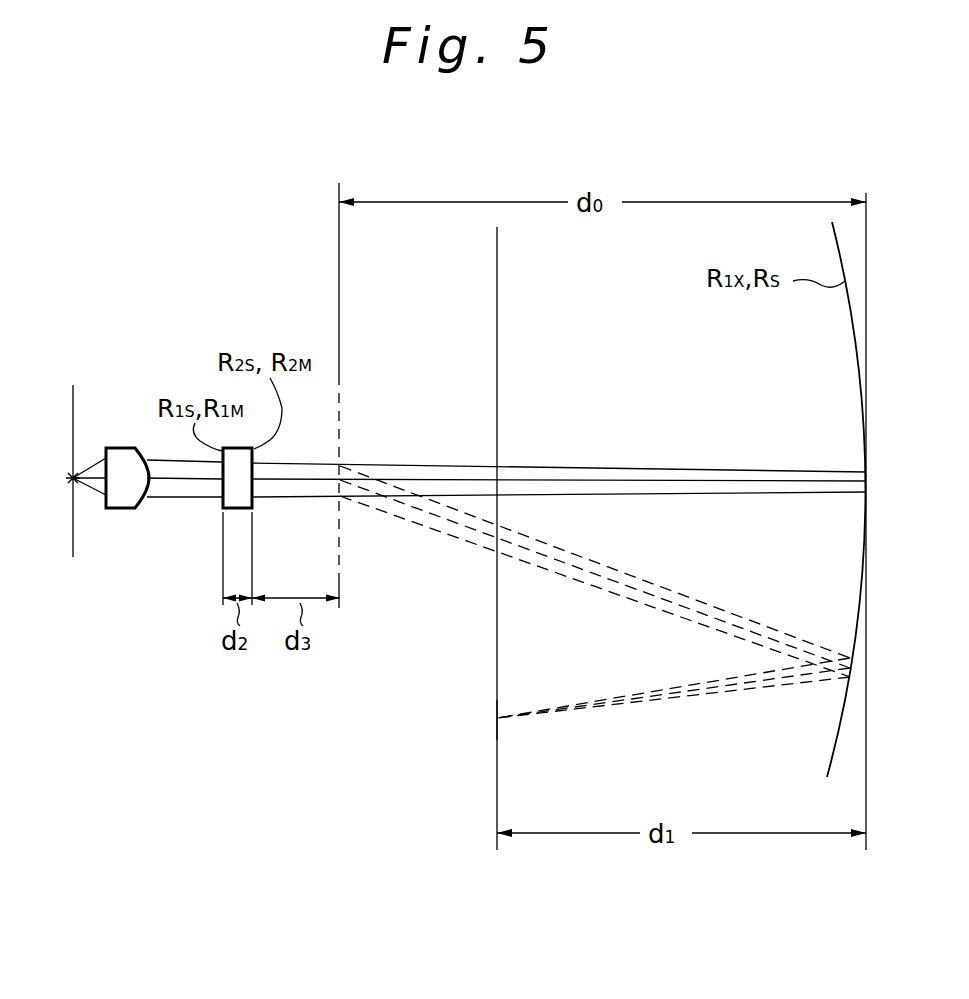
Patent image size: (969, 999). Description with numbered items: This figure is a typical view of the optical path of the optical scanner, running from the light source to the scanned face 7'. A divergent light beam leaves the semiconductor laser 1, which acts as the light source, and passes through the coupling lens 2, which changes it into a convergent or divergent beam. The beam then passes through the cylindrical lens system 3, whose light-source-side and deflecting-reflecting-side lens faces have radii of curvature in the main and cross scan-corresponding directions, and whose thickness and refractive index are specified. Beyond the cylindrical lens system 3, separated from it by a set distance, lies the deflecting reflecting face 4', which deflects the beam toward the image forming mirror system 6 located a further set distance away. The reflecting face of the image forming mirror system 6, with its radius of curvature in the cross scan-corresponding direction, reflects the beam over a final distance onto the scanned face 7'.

The semiconductor laser 1 is at (76, 471).
The coupling lens 2 is at (124, 460).
The cylindrical lens system 3 is at (240, 453).
The deflecting reflecting face 4' is at (367, 395).
The image forming mirror system 6 is at (832, 752).
The scanned face 7' is at (526, 737).